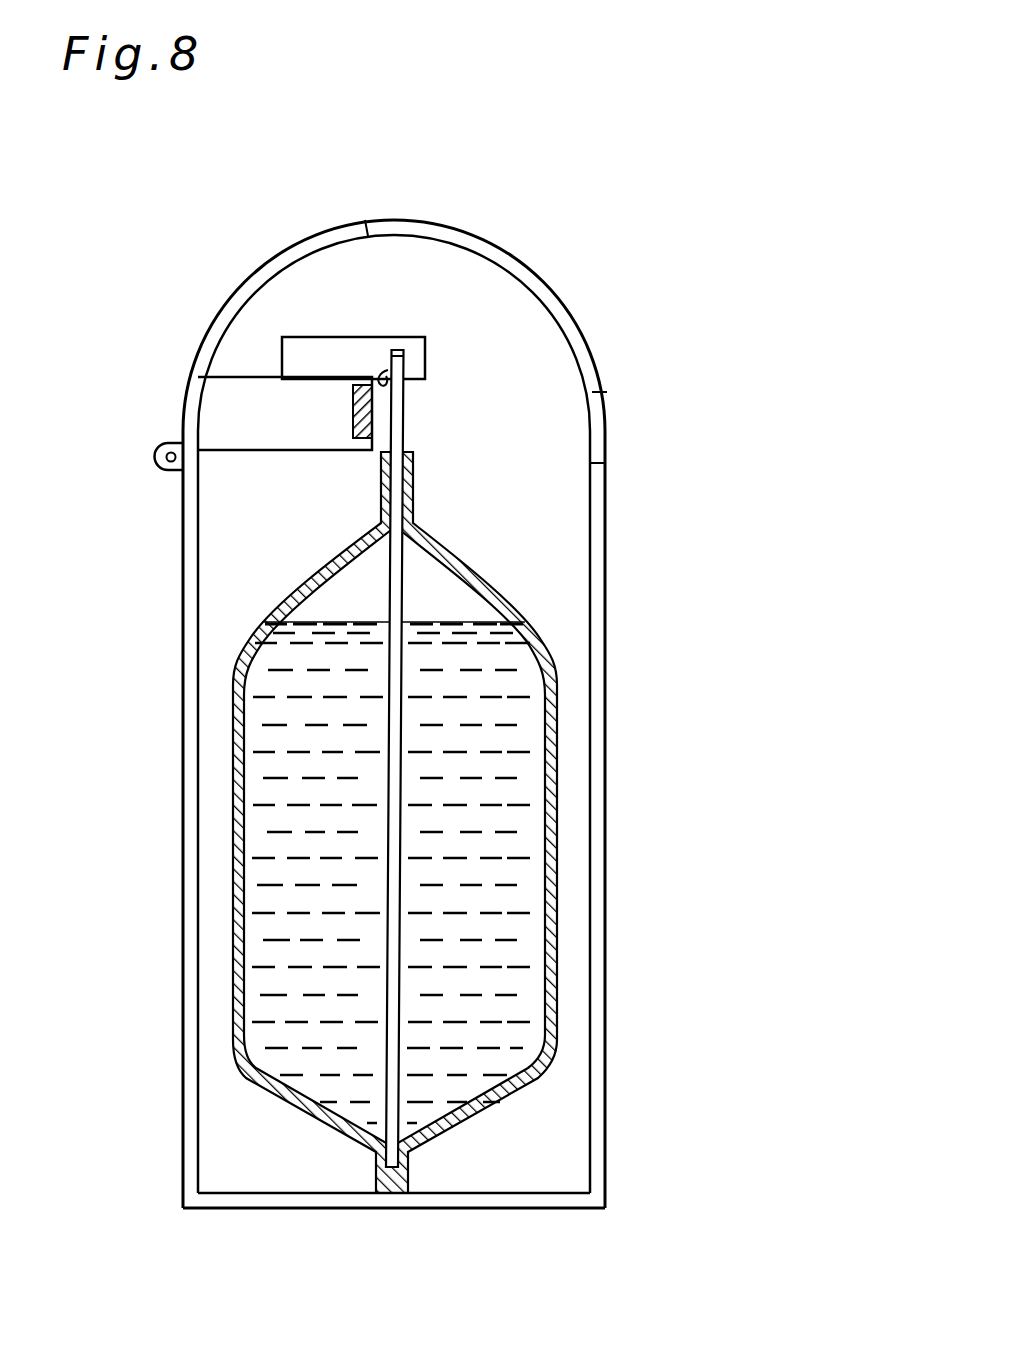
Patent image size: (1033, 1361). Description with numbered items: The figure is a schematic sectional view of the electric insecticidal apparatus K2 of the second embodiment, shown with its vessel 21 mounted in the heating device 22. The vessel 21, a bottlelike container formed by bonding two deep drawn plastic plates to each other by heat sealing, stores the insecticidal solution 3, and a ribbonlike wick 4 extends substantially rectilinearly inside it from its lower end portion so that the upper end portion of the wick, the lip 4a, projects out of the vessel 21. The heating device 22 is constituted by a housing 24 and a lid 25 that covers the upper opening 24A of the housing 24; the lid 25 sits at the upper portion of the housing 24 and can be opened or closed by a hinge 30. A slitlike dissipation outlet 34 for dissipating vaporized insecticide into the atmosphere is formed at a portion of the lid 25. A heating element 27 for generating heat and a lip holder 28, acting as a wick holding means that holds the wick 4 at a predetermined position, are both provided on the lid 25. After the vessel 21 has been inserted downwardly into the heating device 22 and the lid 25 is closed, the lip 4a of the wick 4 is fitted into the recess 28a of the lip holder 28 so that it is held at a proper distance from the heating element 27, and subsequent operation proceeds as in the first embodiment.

The electric insecticidal apparatus K2 is at (703, 515).
The heating device 22 is at (151, 556).
The housing 24 is at (606, 623).
The upper opening 24A is at (510, 489).
The lid 25 is at (265, 262).
The dissipation outlet 34 is at (523, 268).
The hinge 30 is at (156, 452).
The lip holder 28 is at (427, 357).
The recess 28a is at (380, 376).
The heating element 27 is at (373, 420).
The lip 4a is at (403, 397).
The wick 4 is at (402, 600).
The vessel 21 is at (234, 814).
The insecticidal solution 3 is at (503, 879).